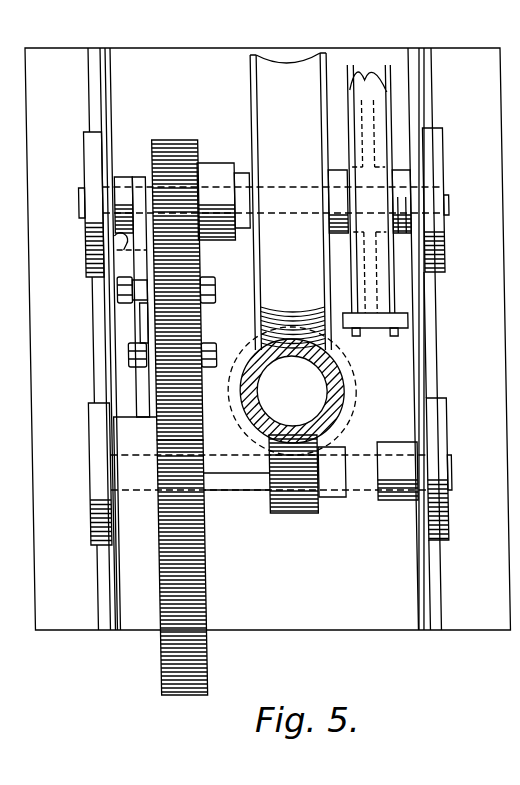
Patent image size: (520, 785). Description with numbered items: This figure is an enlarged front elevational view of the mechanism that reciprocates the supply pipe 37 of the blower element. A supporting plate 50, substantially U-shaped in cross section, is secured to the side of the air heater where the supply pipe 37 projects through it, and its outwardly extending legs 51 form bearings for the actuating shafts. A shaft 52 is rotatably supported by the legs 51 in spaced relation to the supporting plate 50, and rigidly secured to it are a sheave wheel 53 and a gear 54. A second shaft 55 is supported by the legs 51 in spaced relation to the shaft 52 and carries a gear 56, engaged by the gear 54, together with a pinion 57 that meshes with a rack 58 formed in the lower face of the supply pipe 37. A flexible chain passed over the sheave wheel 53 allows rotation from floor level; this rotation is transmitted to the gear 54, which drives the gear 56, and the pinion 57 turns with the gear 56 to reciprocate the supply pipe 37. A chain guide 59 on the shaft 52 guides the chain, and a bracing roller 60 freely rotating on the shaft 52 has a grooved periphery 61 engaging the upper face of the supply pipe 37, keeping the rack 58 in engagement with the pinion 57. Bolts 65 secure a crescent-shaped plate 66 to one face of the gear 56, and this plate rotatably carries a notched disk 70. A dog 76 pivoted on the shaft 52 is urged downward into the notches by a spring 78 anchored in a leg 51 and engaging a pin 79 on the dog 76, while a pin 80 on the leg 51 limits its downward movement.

The supply pipe 37 is at (342, 385).
The supporting plate 50 is at (352, 612).
The legs 51 is at (105, 102).
The shaft 52 is at (446, 195).
The sheave wheel 53 is at (370, 88).
The gear 54 is at (172, 155).
The second shaft 55 is at (232, 477).
The gear 56 is at (172, 612).
The pinion 57 is at (296, 503).
The rack 58 is at (327, 440).
The chain guide 59 is at (383, 320).
The bracing roller 60 is at (265, 72).
The grooved periphery 61 is at (262, 52).
The bolts 65 is at (128, 360).
The crescent-shaped plate 66 is at (148, 370).
The disk 70 is at (135, 318).
The dog 76 is at (140, 197).
The spring 78 is at (110, 198).
The pin 79 is at (120, 252).
The pin 80 is at (122, 270).